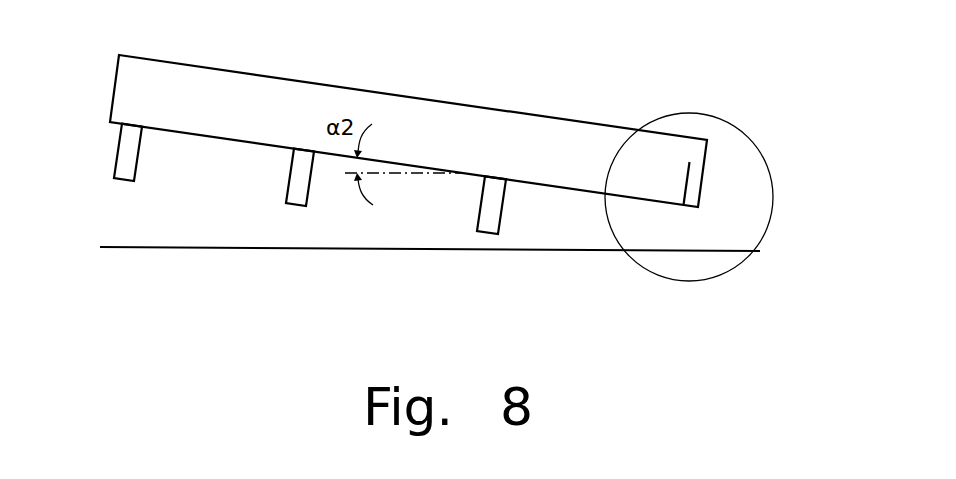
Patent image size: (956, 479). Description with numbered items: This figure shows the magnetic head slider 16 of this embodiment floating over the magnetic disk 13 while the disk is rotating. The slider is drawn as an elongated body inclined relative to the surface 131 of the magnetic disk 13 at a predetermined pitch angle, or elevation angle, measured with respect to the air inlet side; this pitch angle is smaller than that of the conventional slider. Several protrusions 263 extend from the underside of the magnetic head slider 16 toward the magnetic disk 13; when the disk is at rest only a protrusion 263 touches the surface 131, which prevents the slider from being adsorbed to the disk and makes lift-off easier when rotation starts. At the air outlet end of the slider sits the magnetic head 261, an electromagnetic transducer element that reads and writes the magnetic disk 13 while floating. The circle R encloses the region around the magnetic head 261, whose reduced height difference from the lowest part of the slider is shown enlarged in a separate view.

The magnetic head slider 16 is at (427, 105).
The protrusion 263 is at (288, 185).
The magnetic head 261 is at (688, 180).
The circle R is at (689, 185).
The surface 131 is at (117, 247).
The magnetic disk 13 is at (100, 264).